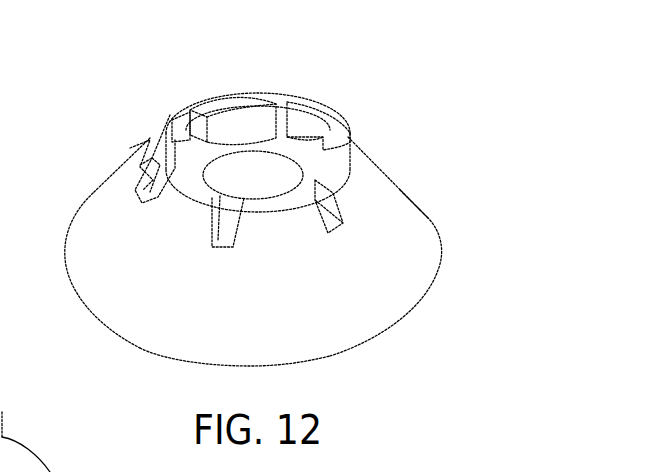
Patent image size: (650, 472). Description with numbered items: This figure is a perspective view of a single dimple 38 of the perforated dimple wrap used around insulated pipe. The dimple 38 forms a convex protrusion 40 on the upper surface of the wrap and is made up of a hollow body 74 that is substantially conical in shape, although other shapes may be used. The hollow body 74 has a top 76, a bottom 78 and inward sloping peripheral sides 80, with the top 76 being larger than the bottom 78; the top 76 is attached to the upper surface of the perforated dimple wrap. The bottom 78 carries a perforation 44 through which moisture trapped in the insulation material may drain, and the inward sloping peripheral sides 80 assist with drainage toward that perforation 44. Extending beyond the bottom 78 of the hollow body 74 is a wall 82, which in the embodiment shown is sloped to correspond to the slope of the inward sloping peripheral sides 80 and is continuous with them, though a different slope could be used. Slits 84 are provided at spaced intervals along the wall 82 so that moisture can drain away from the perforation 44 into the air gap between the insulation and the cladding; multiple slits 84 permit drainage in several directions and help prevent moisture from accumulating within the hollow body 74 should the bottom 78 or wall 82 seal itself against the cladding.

The dimple 38 is at (376, 74).
The convex protrusion 40 is at (93, 196).
The perforation 44 is at (255, 177).
The hollow body 74 is at (0, 32).
The top 76 is at (227, 362).
The bottom 78 is at (197, 163).
The inward sloping peripheral sides 80 is at (415, 218).
The wall 82 is at (239, 120).
The slits 84 is at (223, 236).